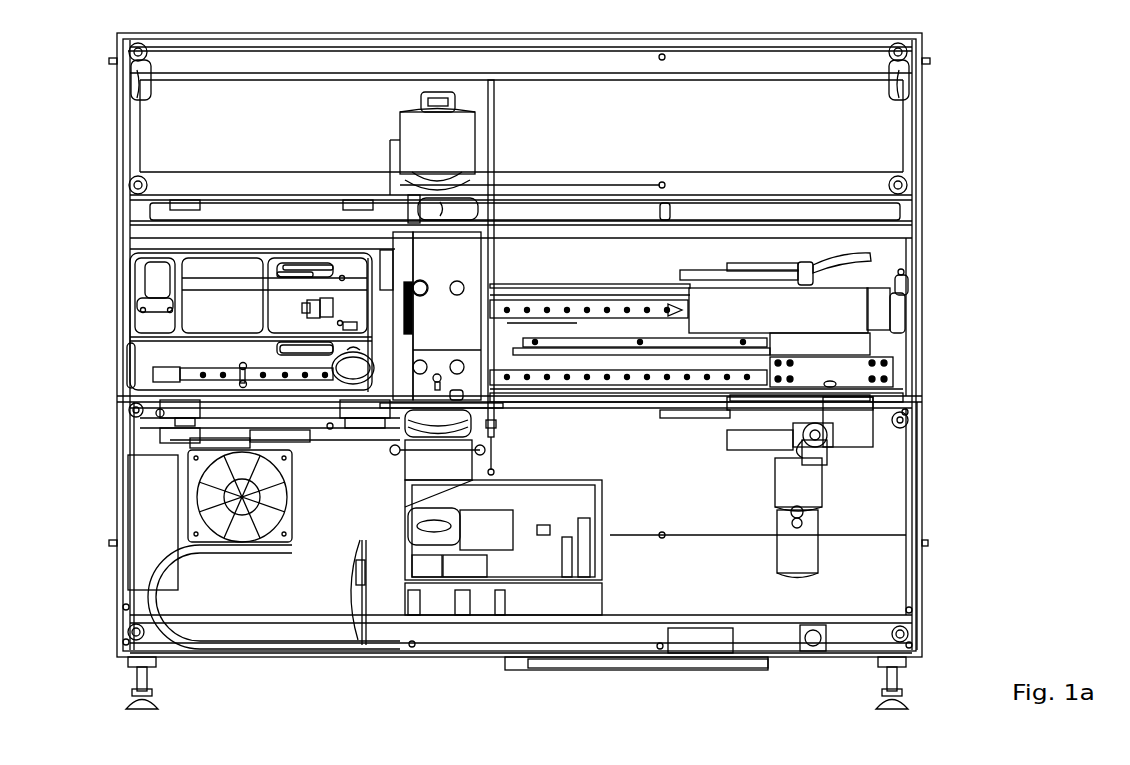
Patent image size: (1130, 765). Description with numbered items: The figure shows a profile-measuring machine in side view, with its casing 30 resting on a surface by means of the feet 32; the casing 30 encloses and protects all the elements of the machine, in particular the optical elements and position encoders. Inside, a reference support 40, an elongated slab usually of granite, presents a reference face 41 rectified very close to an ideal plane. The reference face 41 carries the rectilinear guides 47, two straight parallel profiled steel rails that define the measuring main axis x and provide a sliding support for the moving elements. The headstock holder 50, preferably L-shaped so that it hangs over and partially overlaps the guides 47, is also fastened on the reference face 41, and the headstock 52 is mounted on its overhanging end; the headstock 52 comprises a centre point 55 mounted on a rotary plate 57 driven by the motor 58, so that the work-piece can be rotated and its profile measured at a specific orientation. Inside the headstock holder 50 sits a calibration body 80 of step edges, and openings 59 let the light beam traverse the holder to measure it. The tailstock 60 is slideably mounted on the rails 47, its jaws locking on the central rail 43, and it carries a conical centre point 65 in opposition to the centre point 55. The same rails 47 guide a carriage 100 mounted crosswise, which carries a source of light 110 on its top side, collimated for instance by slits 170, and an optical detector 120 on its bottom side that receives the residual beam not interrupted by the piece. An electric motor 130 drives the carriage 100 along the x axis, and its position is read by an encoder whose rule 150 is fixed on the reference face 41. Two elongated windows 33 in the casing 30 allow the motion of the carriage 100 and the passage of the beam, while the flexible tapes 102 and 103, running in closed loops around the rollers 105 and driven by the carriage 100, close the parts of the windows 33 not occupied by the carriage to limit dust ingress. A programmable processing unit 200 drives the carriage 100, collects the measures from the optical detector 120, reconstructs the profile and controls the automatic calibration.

The casing 30 is at (920, 545).
The feet 32 is at (906, 704).
The elongated windows 33 is at (670, 216).
The reference support 40 is at (862, 442).
The reference face 41 is at (580, 312).
The central rail 43 is at (718, 343).
The rectilinear guides 47 is at (598, 310).
The headstock holder 50 is at (152, 350).
The headstock 52 is at (384, 408).
The centre point 55 is at (417, 302).
The rotary plate 57 is at (417, 275).
The motor 58 is at (330, 385).
The openings 59 is at (290, 277).
The tailstock 60 is at (843, 308).
The conical centre point 65 is at (670, 308).
The calibration body 80 is at (320, 317).
The carriage 100 is at (470, 277).
The flexible tape 102 is at (778, 58).
The flexible tape 103 is at (917, 438).
The rollers 105 is at (898, 186).
The source of light 110 is at (467, 132).
The optical detector 120 is at (463, 470).
The electric motor 130 is at (787, 493).
The rule 150 is at (705, 352).
The slits 170 is at (462, 212).
The programmable processing unit 200 is at (153, 482).